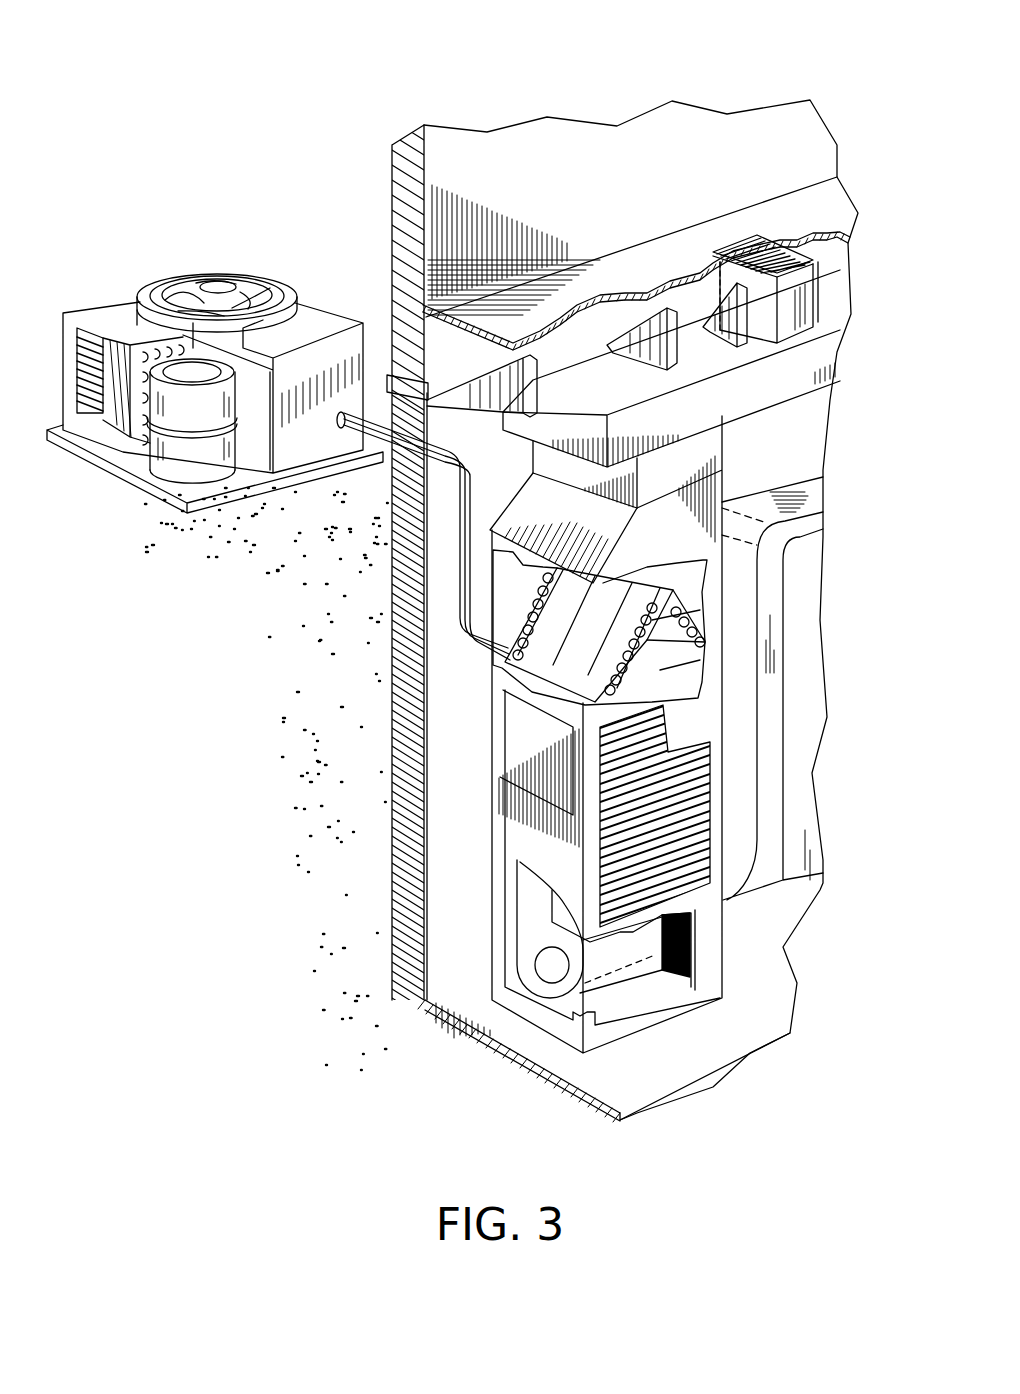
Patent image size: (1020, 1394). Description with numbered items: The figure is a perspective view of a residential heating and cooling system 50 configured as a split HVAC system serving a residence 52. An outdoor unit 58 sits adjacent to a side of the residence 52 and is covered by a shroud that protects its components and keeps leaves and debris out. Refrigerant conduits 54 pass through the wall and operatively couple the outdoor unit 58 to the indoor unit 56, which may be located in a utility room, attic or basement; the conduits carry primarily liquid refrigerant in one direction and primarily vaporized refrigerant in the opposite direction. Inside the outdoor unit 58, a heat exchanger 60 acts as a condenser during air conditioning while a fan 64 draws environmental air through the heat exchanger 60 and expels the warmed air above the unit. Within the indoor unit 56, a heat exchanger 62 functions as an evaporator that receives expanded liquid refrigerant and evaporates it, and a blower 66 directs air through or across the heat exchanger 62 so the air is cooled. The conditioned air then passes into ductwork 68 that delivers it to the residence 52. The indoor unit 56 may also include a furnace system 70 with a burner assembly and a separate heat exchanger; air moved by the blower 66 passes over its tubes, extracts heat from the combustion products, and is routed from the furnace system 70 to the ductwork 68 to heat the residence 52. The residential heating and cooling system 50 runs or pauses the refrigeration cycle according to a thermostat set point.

The residential heating and cooling system 50 is at (208, 93).
The residence 52 is at (531, 147).
The refrigerant conduits 54 is at (463, 542).
The indoor unit 56 is at (474, 792).
The outdoor unit 58 is at (178, 268).
The heat exchanger 60 is at (145, 352).
The heat exchanger 62 is at (553, 662).
The fan 64 is at (232, 283).
The blower 66 is at (545, 988).
The ductwork 68 is at (769, 383).
The furnace system 70 is at (503, 740).